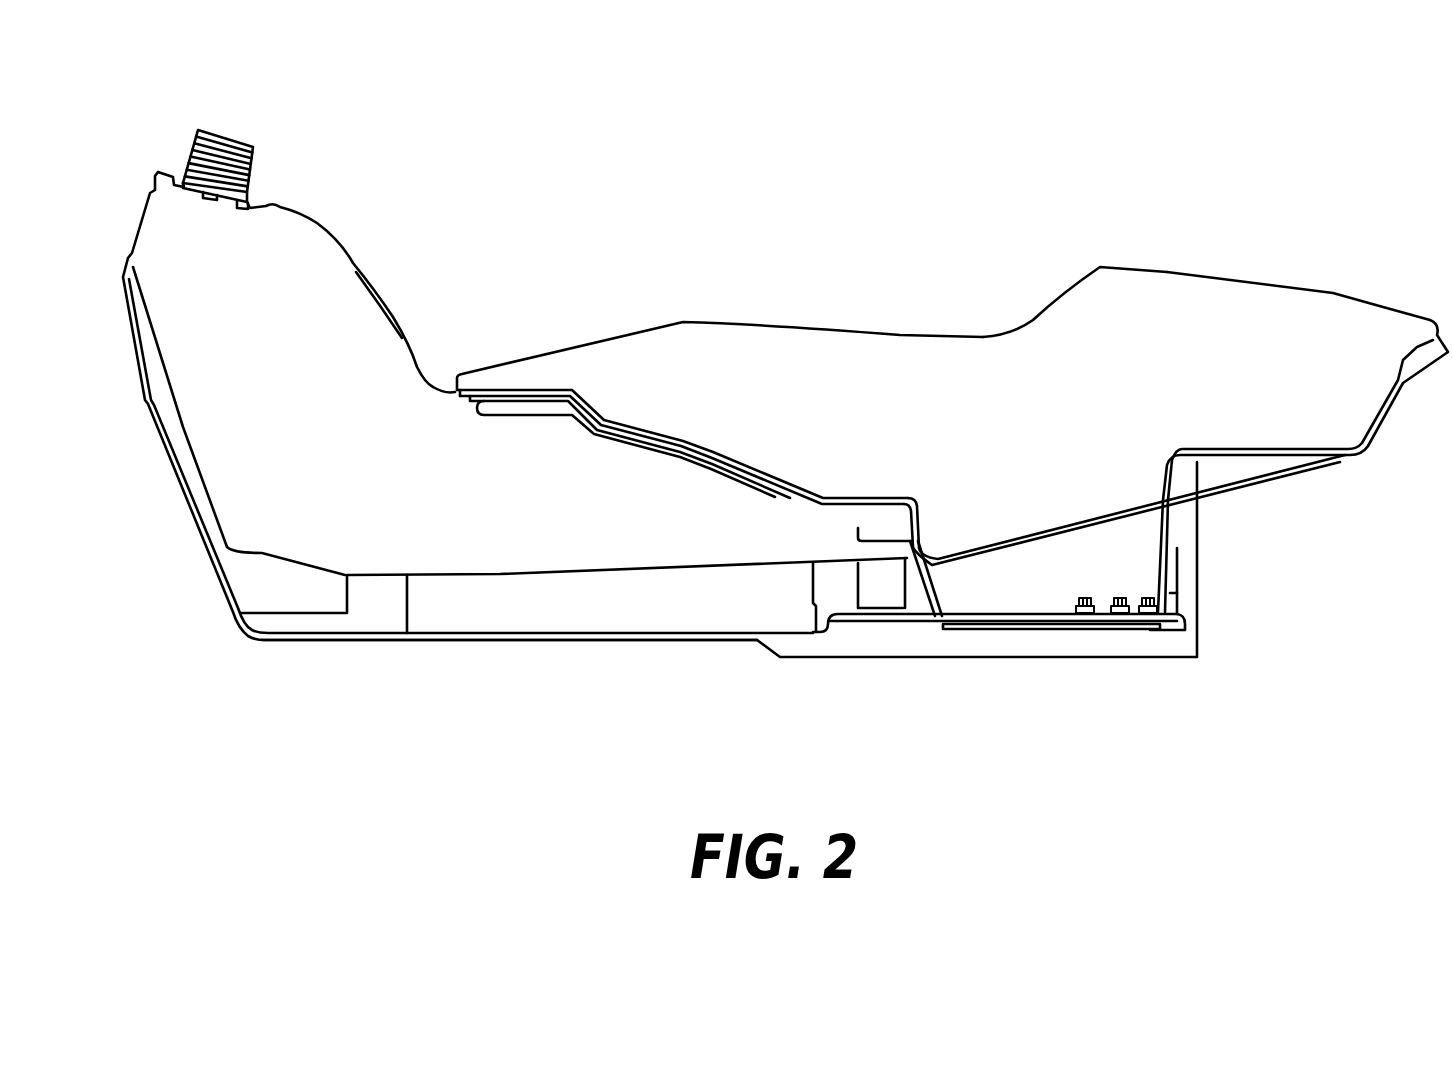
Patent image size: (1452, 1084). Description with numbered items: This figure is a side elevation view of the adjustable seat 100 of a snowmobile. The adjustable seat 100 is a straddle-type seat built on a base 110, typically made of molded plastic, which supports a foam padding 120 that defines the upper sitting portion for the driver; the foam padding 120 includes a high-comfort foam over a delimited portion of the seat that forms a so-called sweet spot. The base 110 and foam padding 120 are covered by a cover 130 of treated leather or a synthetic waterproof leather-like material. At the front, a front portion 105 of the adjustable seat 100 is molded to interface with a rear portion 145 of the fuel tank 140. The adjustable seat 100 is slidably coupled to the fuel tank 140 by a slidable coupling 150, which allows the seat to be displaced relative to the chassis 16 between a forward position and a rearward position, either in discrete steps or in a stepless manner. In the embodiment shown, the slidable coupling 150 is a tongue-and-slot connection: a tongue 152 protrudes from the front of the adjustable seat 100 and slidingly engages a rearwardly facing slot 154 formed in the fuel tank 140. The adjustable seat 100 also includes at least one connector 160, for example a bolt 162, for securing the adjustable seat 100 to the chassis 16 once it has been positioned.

The chassis 16 is at (507, 640).
The adjustable seat 100 is at (895, 224).
The front portion 105 is at (643, 357).
The base 110 is at (1197, 468).
The foam padding 120 is at (1050, 330).
The cover 130 is at (1347, 295).
The fuel tank 140 is at (304, 243).
The rear portion 145 is at (633, 518).
The slidable coupling 150 is at (440, 303).
The tongue 152 is at (515, 400).
The slot 154 is at (528, 410).
The connector 160 is at (1102, 686).
The bolt 162 is at (1160, 630).